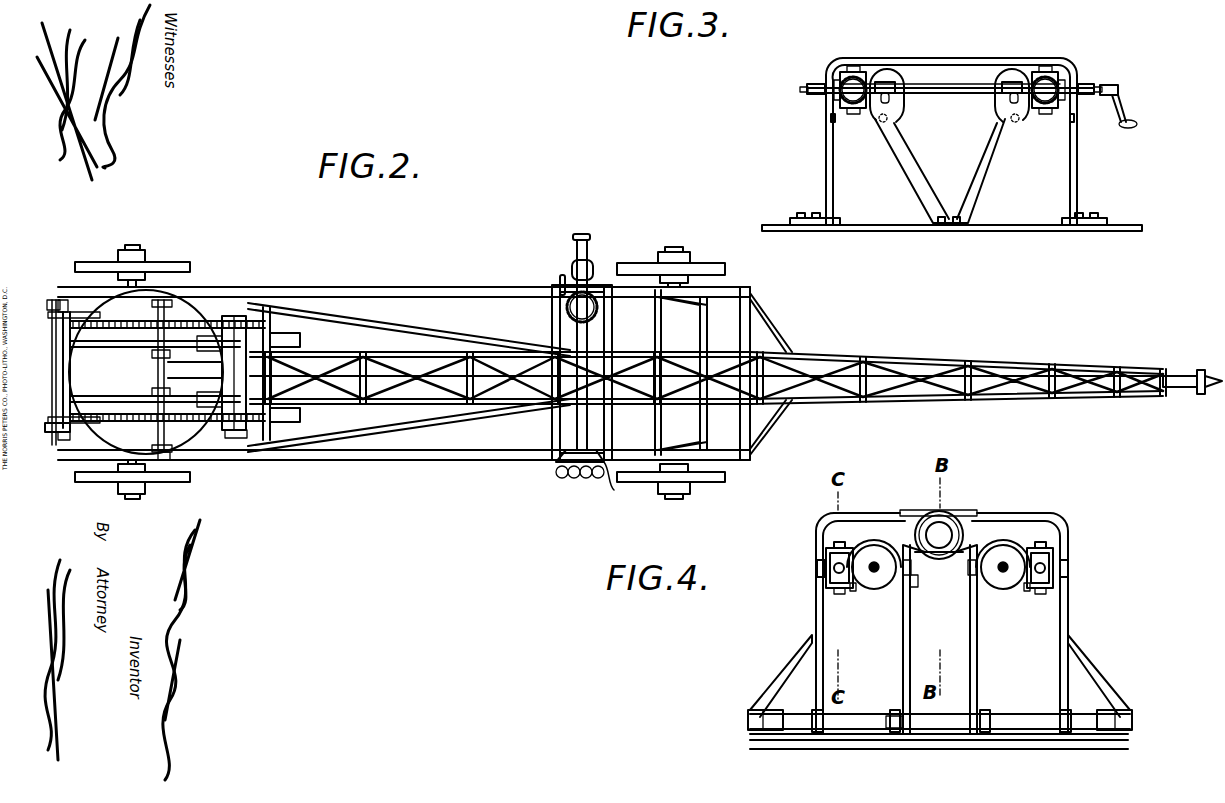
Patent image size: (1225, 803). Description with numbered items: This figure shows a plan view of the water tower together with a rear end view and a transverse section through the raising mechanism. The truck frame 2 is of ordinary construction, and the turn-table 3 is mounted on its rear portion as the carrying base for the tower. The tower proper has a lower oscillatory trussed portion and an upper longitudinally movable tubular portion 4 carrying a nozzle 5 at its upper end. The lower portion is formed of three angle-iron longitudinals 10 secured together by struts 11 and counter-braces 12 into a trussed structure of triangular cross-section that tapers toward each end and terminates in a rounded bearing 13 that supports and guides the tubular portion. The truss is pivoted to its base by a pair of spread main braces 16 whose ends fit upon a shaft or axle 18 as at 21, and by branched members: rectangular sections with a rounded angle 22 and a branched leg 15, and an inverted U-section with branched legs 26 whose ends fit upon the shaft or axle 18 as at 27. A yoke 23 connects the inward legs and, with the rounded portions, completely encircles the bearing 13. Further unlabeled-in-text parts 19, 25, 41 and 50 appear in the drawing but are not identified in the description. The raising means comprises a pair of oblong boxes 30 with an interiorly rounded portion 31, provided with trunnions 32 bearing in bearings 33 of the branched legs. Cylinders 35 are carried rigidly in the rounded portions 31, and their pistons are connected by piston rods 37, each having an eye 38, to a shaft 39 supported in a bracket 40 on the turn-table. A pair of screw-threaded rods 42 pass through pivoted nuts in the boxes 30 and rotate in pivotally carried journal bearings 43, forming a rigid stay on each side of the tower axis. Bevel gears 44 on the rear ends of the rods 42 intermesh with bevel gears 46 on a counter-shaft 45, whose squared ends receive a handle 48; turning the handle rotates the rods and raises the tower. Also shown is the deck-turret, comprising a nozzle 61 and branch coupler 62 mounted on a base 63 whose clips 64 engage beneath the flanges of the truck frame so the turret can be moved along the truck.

In FIG. 2, the truck frame 2 is at (425, 289).
In FIG. 2, the turn-table 3 is at (144, 290).
In FIG. 4, the turn-table 3 is at (1128, 749).
In FIG. 2, the tubular portion 4 is at (488, 372).
In FIG. 2, the nozzle 5 is at (1208, 372).
In FIG. 2, the longitudinals 10 is at (895, 360).
In FIG. 2, the struts 11 is at (946, 396).
In FIG. 2, the counter-braces 12 is at (830, 386).
In FIG. 4, the rounded bearing 13 is at (952, 530).
In FIG. 2, the branched leg 15 is at (215, 300).
In FIG. 4, the branched leg 15 is at (818, 606).
In FIG. 2, the main braces 16 is at (440, 336).
In FIG. 4, the main braces 16 is at (791, 666).
In FIG. 2, the shaft or axle 18 is at (172, 462).
In FIG. 4, the shaft or axle 18 is at (1018, 716).
In FIG. 2, the rod 19 is at (157, 372).
In FIG. 4, the rod 19 is at (896, 714).
In FIG. 2, the brace end seat 21 is at (168, 300).
In FIG. 4, the brace end seat 21 is at (822, 735).
In FIG. 2, the rounded angle 22 is at (240, 312).
In FIG. 4, the rounded angle 22 is at (1046, 516).
In FIG. 2, the yoke 23 is at (234, 373).
In FIG. 4, the yoke 23 is at (945, 512).
In FIG. 4, the bolt 25 is at (940, 558).
In FIG. 2, the branched legs of inverted U-section 26 is at (212, 392).
In FIG. 4, the branched legs of inverted U-section 26 is at (970, 658).
In FIG. 2, the branch seat on shaft 27 is at (168, 358).
In FIG. 4, the branch seat on shaft 27 is at (898, 735).
In FIG. 4, the oblong boxes 30 is at (854, 590).
In FIG. 4, the rounded portion of box 31 is at (1006, 549).
In FIG. 2, the trunnions 32 is at (240, 440).
In FIG. 4, the trunnions 32 is at (817, 569).
In FIG. 4, the bearings 33 is at (916, 588).
In FIG. 2, the cylinders 35 is at (286, 334).
In FIG. 4, the cylinders 35 is at (871, 578).
In FIG. 2, the piston rods 37 is at (134, 337).
In FIG. 3, the eye 38 is at (881, 81).
In FIG. 3, the shaft 39 is at (977, 84).
In FIG. 4, the shaft 39 is at (877, 574).
In FIG. 3, the bracket 40 is at (978, 183).
In FIG. 2, the bracket 40 is at (72, 353).
In FIG. 4, the nut 41 is at (1055, 588).
In FIG. 2, the screw-threaded rods 42 is at (121, 322).
In FIG. 4, the screw-threaded rods 42 is at (829, 568).
In FIG. 3, the journal bearings 43 is at (1075, 62).
In FIG. 3, the bevel gears 44 is at (843, 78).
In FIG. 2, the bevel gears 44 is at (58, 413).
In FIG. 3, the counter-shaft 45 is at (952, 94).
In FIG. 2, the counter-shaft 45 is at (61, 300).
In FIG. 3, the bevel gears 46 is at (822, 82).
In FIG. 2, the bevel gears 46 is at (52, 302).
In FIG. 3, the handle 48 is at (1121, 92).
In FIG. 2, the handle 48 is at (55, 440).
In FIG. 2, the rod 50 is at (1180, 388).
In FIG. 2, the nozzle 61 is at (588, 249).
In FIG. 2, the branch coupler 62 is at (575, 479).
In FIG. 2, the base 63 is at (556, 310).
In FIG. 2, the clips 64 is at (528, 486).